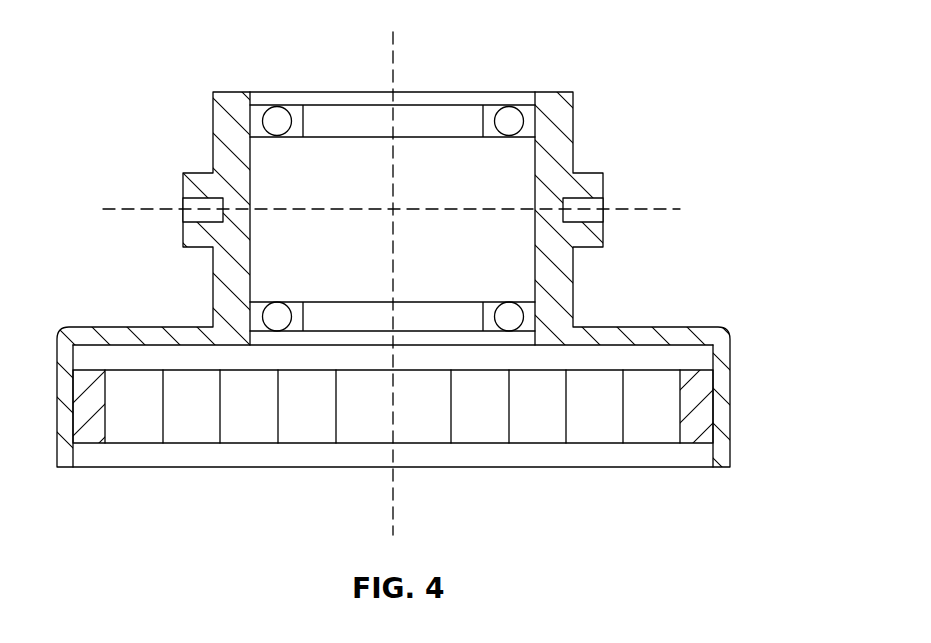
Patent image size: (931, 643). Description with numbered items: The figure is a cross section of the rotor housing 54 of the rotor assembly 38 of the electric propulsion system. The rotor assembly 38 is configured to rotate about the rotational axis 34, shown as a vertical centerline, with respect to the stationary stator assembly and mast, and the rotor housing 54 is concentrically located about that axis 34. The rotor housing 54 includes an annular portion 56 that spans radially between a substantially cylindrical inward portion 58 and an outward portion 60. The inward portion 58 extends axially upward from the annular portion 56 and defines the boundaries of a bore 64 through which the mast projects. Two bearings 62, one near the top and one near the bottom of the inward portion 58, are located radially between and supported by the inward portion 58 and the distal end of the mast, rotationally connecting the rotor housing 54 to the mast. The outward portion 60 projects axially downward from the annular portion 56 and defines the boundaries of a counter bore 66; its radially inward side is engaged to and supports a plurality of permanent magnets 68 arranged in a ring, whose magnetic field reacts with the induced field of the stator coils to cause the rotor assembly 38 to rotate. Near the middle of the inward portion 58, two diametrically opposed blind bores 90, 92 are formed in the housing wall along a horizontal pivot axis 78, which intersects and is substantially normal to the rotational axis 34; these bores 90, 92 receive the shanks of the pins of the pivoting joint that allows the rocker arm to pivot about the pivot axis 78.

The axis 34 is at (393, 58).
The rotor assembly 38 is at (574, 36).
The rotor housing 54 is at (585, 127).
The annular portion 56 is at (672, 327).
The inward portion 58 is at (213, 292).
The outward portion 60 is at (730, 403).
The bearing 62 is at (468, 100).
The bore 64 is at (336, 229).
The counter bore 66 is at (579, 421).
The permanent magnets 68 is at (193, 427).
The pivot axis 78 is at (678, 208).
The bore 90 is at (597, 205).
The bore 92 is at (185, 213).